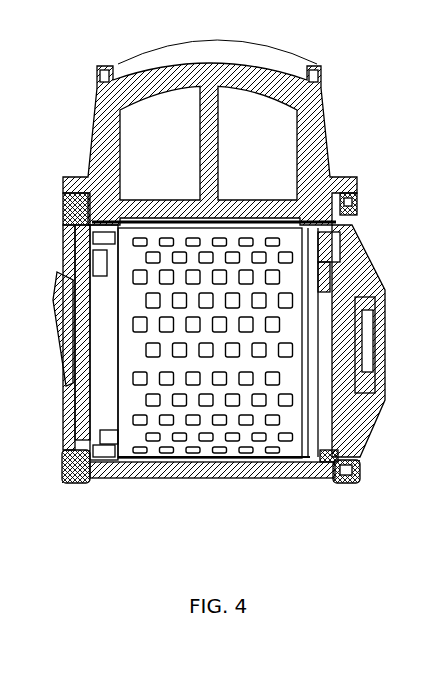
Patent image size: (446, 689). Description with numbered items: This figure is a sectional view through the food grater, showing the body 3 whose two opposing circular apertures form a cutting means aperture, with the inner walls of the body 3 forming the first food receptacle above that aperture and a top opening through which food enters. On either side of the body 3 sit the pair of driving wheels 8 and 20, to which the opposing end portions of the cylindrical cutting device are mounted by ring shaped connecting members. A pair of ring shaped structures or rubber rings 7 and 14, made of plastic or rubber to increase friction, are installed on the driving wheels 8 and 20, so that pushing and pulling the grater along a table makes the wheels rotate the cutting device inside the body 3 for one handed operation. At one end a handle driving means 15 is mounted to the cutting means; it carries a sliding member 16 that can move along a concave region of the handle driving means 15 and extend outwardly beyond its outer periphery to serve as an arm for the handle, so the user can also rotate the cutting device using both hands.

The body 3 is at (323, 165).
The rubber ring 7 is at (88, 477).
The driving wheel 8 is at (75, 215).
The rubber ring 14 is at (352, 482).
The handle driving means 15 is at (378, 407).
The sliding member 16 is at (382, 327).
The driving wheel 20 is at (350, 213).